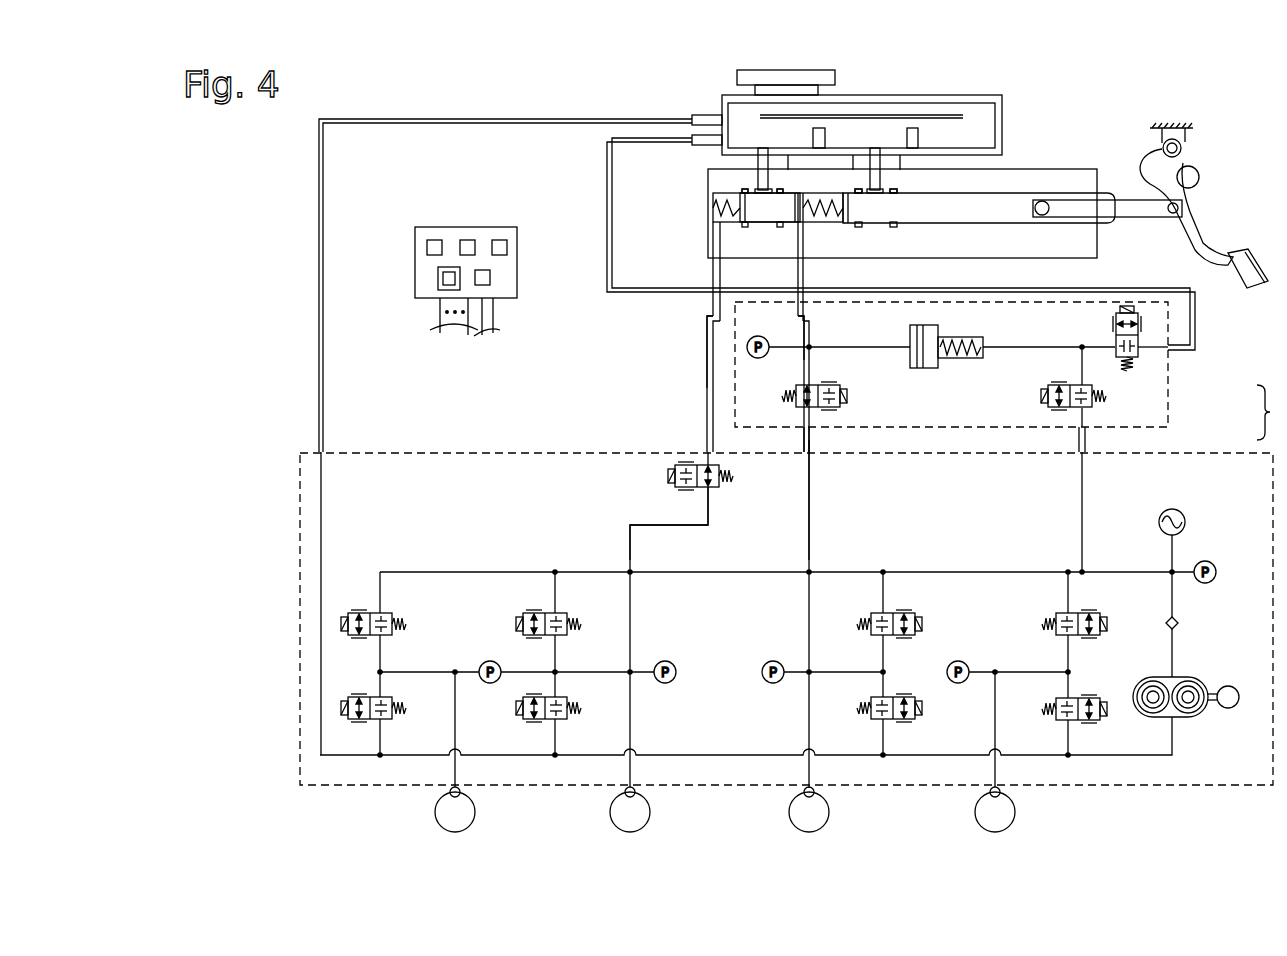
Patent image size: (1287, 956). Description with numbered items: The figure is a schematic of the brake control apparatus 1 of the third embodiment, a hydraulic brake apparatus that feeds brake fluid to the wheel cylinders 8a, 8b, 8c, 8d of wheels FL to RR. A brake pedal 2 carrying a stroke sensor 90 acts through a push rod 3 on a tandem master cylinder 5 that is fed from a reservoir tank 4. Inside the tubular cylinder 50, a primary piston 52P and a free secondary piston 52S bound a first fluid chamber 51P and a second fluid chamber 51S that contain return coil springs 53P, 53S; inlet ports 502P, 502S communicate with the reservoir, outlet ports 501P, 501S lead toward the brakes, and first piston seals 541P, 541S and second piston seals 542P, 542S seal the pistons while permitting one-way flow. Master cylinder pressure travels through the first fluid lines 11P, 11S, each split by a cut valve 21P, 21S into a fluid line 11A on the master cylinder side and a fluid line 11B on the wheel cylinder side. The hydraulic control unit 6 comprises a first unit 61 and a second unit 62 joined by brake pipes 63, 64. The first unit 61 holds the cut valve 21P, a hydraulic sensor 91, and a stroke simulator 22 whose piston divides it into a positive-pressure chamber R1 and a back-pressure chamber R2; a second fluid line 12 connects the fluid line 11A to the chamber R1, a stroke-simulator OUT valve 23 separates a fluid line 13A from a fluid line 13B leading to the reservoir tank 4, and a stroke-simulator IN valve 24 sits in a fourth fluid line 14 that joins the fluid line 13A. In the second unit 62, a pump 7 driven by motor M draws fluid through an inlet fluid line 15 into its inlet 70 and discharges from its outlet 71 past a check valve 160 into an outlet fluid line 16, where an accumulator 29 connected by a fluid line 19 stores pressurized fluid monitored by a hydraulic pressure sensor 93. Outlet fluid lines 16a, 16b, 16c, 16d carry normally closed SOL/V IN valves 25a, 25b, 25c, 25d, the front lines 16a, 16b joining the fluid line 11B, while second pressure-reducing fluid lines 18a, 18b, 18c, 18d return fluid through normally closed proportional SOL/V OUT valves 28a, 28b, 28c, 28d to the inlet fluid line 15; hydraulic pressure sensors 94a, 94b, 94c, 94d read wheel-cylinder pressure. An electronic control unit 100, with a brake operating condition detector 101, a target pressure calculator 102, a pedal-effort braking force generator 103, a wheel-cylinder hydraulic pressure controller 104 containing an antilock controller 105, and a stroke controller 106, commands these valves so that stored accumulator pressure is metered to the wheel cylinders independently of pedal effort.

The brake control apparatus 1 is at (612, 104).
The brake pedal 2 is at (1197, 228).
The push rod 3 is at (1125, 200).
The reservoir tank 4 is at (1003, 118).
The master cylinder 5 is at (1052, 160).
The hydraulic control unit 6 is at (1269, 412).
The pump 7 is at (1190, 677).
The second fluid line 12 is at (850, 347).
The fluid line 13A is at (1035, 347).
The fluid line 13B is at (1197, 320).
The fourth fluid line 14 is at (1085, 484).
The inlet fluid line 15 is at (322, 502).
The outlet fluid line 16 is at (705, 572).
The outlet fluid line 16a is at (881, 596).
The outlet fluid line 16b is at (557, 594).
The outlet fluid line 16c is at (1066, 596).
The outlet fluid line 16d is at (382, 594).
The second pressure-reducing fluid line 18a is at (881, 741).
The second pressure-reducing fluid line 18b is at (557, 741).
The second pressure-reducing fluid line 18c is at (1066, 741).
The second pressure-reducing fluid line 18d is at (382, 741).
The fluid line 19 is at (1170, 552).
The cut valve 21P is at (847, 397).
The cut valve 21S is at (709, 489).
The stroke simulator 22 is at (910, 360).
The stroke-simulator OUT valve 23 is at (1115, 322).
The stroke-simulator IN valve 24 is at (1068, 385).
The SOL/V IN valve 25a is at (910, 611).
The SOL/V IN valve 25b is at (525, 611).
The SOL/V IN valve 25c is at (1095, 611).
The SOL/V IN valve 25d is at (352, 611).
The SOL/V OUT valve 28a is at (910, 695).
The SOL/V OUT valve 28b is at (525, 695).
The SOL/V OUT valve 28c is at (1095, 696).
The SOL/V OUT valve 28d is at (352, 695).
The accumulator 29 is at (1178, 510).
The cylinder 50 is at (847, 207).
The first fluid chamber 51P is at (835, 210).
The second fluid chamber 51S is at (722, 202).
The primary piston 52P is at (1002, 222).
The secondary piston 52S is at (762, 216).
The compressed coil spring 53P is at (822, 216).
The compressed coil spring 53S is at (742, 223).
The first unit 61 is at (1170, 385).
The second unit 62 is at (1188, 452).
The brake pipe 63 is at (812, 441).
The brake pipe 64 is at (1087, 441).
The inlet 70 is at (1173, 724).
The outlet 71 is at (1168, 678).
The wheel cylinder 8a is at (820, 795).
The wheel cylinder 8b is at (620, 795).
The wheel cylinder 8c is at (1005, 795).
The wheel cylinder 8d is at (445, 795).
The stroke sensor 90 is at (1200, 174).
The hydraulic sensor 91 is at (758, 358).
The hydraulic pressure sensor 93 is at (1212, 562).
The hydraulic pressure sensor 94a is at (768, 683).
The hydraulic pressure sensor 94b is at (672, 662).
The hydraulic pressure sensor 94c is at (965, 662).
The hydraulic pressure sensor 94d is at (484, 663).
The electronic control unit 100 is at (428, 227).
The brake operating condition detector 101 is at (427, 247).
The calculator 102 is at (462, 240).
The pedal-effort braking force generator 103 is at (497, 240).
The wheel-cylinder hydraulic pressure controller 104 is at (438, 270).
The antilock controller 105 is at (443, 278).
The stroke controller 106 is at (490, 275).
The check valve 160 is at (1178, 621).
The outlet port 501P is at (803, 250).
The outlet port 501S is at (713, 250).
The inlet port 502P is at (876, 189).
The inlet port 502S is at (760, 189).
The first piston seal 541P is at (858, 189).
The first piston seal 541S is at (745, 189).
The second piston seal 542P is at (893, 189).
The second piston seal 542S is at (780, 189).
The positive-pressure chamber R1 is at (910, 335).
The back-pressure chamber R2 is at (938, 362).
The first fluid line 11P is at (640, 313).
The first fluid line 11S is at (593, 388).
The fluid line 11A is at (798, 310).
The fluid line 11B is at (807, 463).